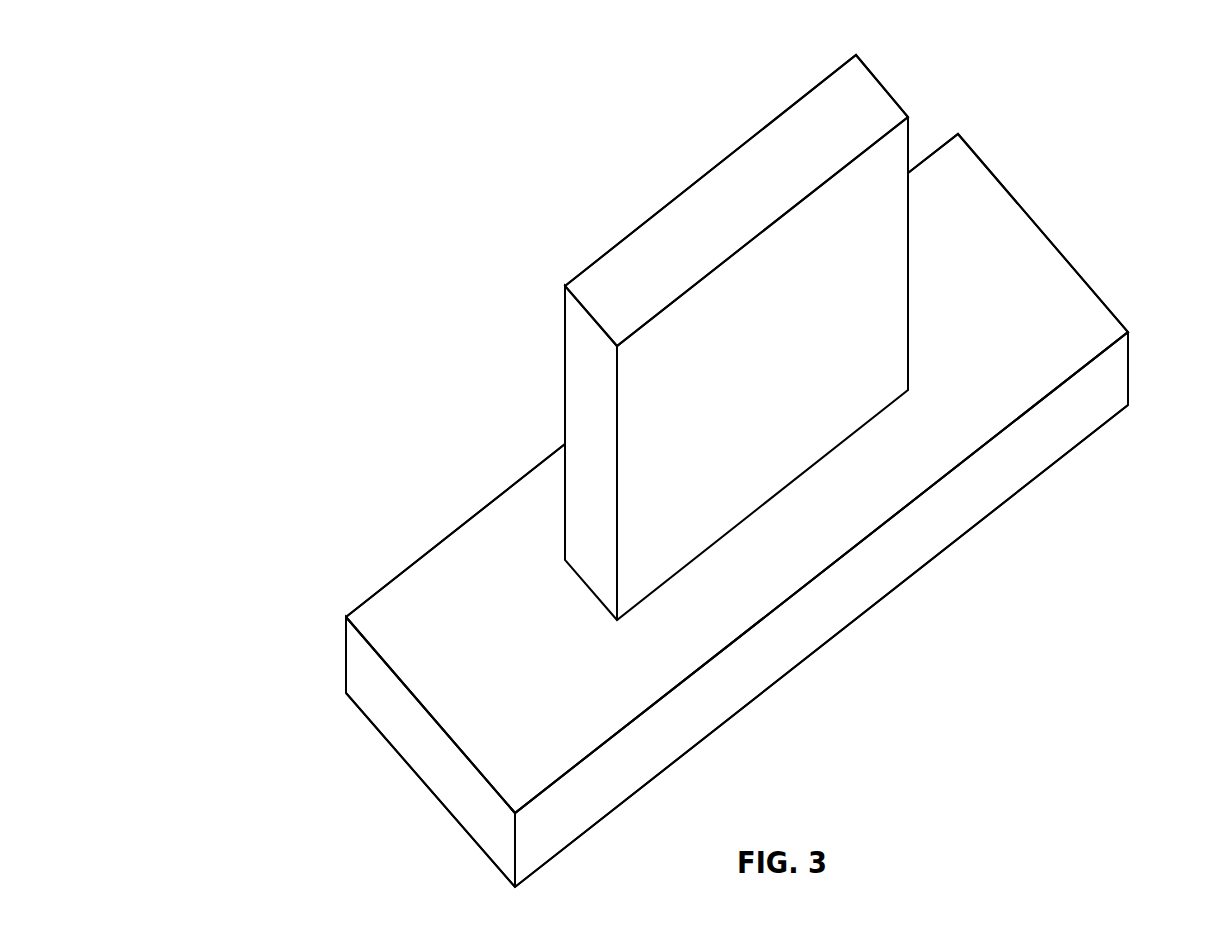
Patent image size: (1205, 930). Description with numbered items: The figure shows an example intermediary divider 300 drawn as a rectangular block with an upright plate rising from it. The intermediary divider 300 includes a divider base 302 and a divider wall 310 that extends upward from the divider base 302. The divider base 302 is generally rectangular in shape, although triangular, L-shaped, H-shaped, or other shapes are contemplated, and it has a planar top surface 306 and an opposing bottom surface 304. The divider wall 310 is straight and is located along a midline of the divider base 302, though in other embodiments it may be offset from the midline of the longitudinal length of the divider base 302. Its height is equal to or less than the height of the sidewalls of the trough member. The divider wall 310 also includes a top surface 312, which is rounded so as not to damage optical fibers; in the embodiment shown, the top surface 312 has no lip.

The intermediary divider 300 is at (297, 123).
The divider base 302 is at (761, 510).
The bottom surface 304 is at (851, 623).
The planar top surface 306 is at (1082, 312).
The divider wall 310 is at (823, 337).
The top surface 312 is at (648, 272).